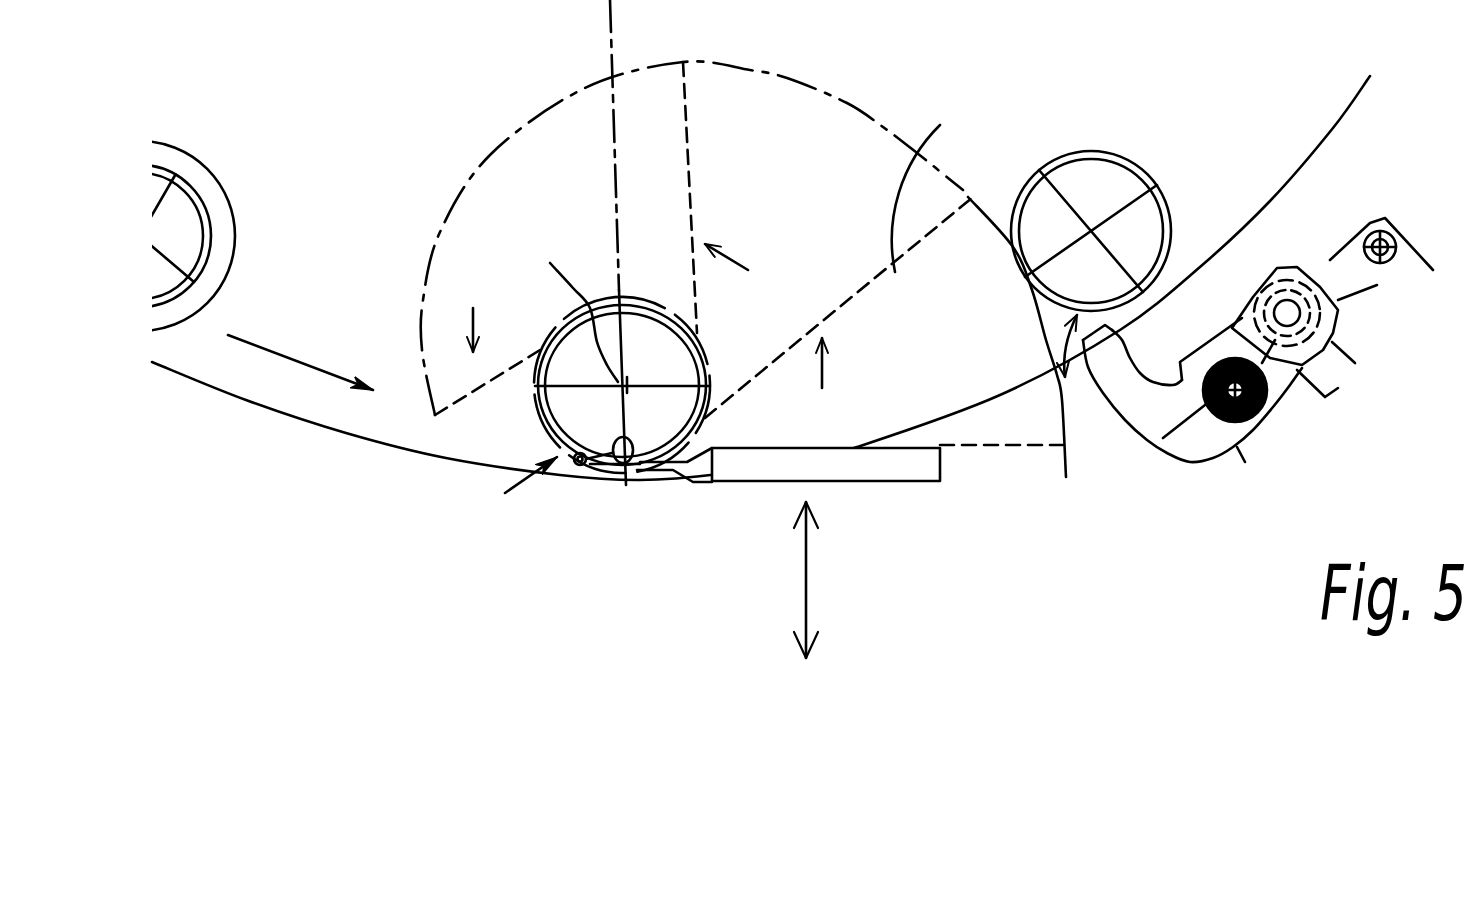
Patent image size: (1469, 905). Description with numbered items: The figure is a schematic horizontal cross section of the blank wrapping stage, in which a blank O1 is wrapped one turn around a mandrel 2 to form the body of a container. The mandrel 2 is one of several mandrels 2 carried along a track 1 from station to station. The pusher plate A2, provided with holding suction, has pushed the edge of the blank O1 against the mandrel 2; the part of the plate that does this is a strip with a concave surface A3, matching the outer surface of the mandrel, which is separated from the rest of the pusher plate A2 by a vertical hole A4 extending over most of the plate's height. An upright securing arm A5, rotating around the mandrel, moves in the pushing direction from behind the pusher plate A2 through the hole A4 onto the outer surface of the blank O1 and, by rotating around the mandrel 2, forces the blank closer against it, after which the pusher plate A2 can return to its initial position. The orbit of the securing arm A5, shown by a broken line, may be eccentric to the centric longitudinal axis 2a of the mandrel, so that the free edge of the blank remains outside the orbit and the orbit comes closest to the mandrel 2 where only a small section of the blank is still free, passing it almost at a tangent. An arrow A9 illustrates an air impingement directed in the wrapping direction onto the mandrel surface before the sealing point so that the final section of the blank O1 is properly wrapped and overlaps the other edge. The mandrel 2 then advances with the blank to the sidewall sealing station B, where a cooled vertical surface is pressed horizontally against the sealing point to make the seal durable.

The conveyor / rotary table 1 is at (337, 412).
The mandrel 2 is at (210, 220).
The centric longitudinal axis of the mandrel 2a is at (555, 304).
The blank O1 is at (936, 169).
The pusher plate A2 is at (858, 470).
The marginal area of the pusher plate with concave surface A3 is at (613, 445).
The vertical hole in the pusher plate A4 is at (688, 483).
The securing arm A5 is at (566, 478).
The arrow illustrating air impingement A9 is at (525, 480).
The sidewall sealing station B is at (1333, 262).